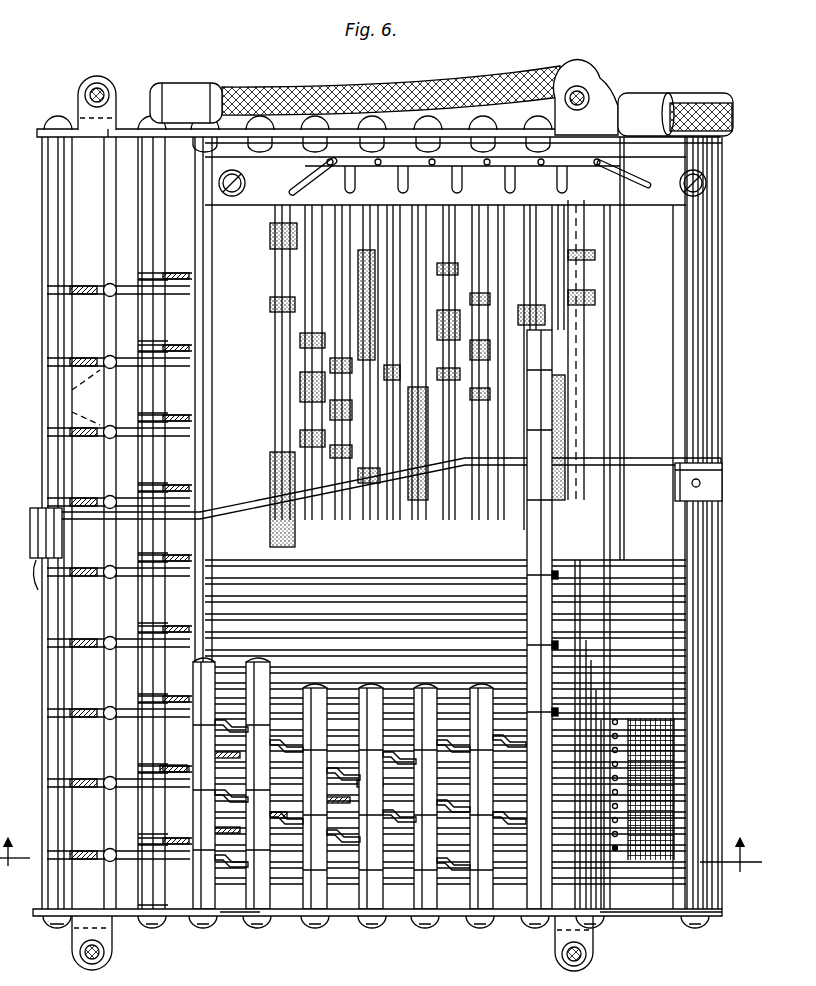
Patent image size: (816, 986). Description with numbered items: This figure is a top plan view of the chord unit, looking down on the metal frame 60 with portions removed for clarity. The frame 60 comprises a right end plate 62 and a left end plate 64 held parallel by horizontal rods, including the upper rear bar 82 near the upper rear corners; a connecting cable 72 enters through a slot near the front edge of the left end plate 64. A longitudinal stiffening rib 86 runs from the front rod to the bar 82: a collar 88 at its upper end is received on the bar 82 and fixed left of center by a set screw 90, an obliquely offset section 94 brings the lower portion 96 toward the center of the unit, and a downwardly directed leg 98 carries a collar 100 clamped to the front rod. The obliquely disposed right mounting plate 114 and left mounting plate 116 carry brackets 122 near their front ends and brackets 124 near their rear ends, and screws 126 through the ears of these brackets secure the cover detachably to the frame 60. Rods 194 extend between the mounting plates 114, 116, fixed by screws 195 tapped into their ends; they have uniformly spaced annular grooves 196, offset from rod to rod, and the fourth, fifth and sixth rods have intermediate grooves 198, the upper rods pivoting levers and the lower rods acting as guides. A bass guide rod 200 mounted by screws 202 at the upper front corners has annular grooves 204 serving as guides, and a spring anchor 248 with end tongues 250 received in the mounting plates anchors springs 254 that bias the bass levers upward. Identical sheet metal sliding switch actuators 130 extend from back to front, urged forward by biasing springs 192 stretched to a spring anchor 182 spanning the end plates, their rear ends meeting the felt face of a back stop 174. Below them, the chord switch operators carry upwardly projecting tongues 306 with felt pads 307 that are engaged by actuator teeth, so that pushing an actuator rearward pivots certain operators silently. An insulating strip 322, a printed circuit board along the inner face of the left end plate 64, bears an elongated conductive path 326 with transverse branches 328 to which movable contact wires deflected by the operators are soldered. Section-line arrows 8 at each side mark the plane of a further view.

The section line 8 is at (381, 870).
The frame 60 is at (645, 919).
The right end plate 62 is at (452, 917).
The left end plate 64 is at (128, 136).
The connecting cable 72 is at (245, 93).
The upper rear bar 82 is at (700, 352).
The longitudinal stiffening rib 86 is at (643, 460).
The sleeve or collar 88 is at (722, 505).
The set screw 90 is at (700, 482).
The intermediate obliquely offset section 94 is at (375, 524).
The lower portion of the rib 96 is at (128, 521).
The vertically downwardly directed leg 98 is at (33, 507).
The sleeve or collar 100 is at (38, 562).
The right mounting plate 114 is at (233, 918).
The left mounting plate 116 is at (187, 121).
The brackets 122 is at (592, 102).
The brackets 124 is at (88, 80).
The screws 126 is at (86, 92).
The sliding switch actuators 130 is at (470, 594).
The back stop 174 is at (714, 578).
The spring anchor 182 is at (592, 352).
The biasing springs 192 is at (684, 722).
The rods 194 is at (163, 209).
The screws 195 is at (372, 121).
The annular circumferential grooves 196 is at (553, 645).
The intermediate annular grooves 198 is at (310, 792).
The bass guide rod 200 is at (60, 238).
The screws 202 is at (57, 118).
The circumferential or annular grooves 204 is at (55, 362).
The spring anchor 248 is at (113, 218).
The longitudinally extending tongues 250 is at (110, 128).
The springs 254 is at (56, 406).
The upwardly projecting lugs or tongues 306 is at (272, 284).
The felt pad 307 is at (358, 302).
The insulating strip 322 is at (655, 195).
The elongated conductive path 326 is at (421, 169).
The transverse branches 328 is at (350, 180).